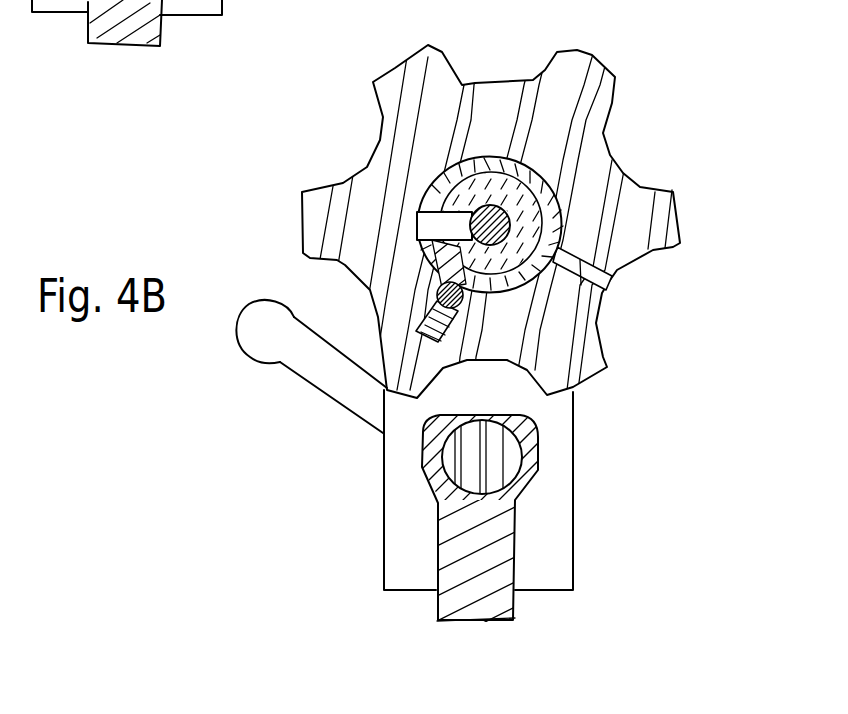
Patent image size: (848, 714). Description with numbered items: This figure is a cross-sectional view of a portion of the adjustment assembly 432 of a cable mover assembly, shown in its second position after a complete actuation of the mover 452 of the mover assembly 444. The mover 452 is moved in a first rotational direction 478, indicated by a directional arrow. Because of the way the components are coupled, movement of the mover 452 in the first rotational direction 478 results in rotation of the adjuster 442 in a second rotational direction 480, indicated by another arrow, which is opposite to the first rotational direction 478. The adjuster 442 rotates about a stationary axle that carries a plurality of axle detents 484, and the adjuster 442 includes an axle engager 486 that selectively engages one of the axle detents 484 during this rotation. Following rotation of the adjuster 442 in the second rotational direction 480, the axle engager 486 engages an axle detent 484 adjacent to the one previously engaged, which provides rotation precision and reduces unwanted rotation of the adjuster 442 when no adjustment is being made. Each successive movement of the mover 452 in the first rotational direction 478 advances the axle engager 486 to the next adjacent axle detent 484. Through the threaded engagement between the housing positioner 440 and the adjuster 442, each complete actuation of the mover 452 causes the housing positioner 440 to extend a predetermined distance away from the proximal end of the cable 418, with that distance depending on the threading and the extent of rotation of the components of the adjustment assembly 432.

The cable 418 is at (489, 222).
The adjustment assembly 432 is at (710, 440).
The housing positioner 440 is at (538, 196).
The adjuster 442 is at (613, 74).
The mover assembly 444 is at (354, 433).
The mover 452 is at (296, 361).
The first rotational direction 478 is at (230, 362).
The second rotational direction 480 is at (314, 163).
The axle detent 484 is at (462, 286).
The axle engager 486 is at (417, 300).